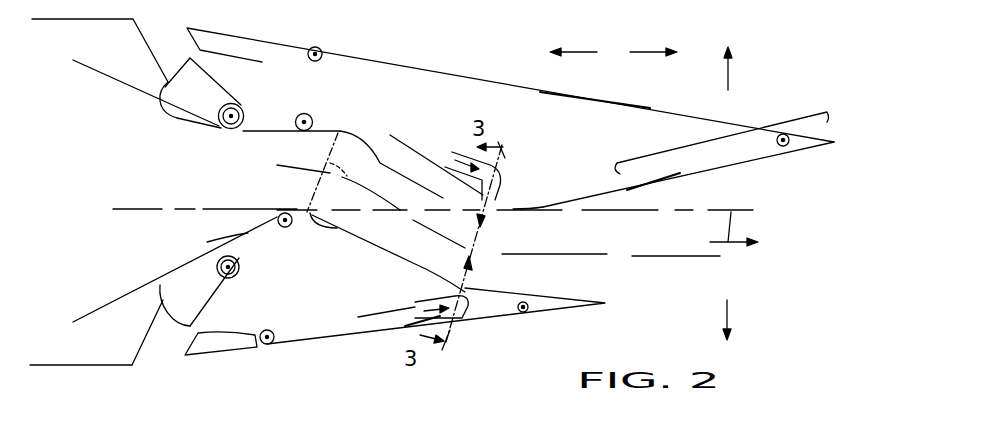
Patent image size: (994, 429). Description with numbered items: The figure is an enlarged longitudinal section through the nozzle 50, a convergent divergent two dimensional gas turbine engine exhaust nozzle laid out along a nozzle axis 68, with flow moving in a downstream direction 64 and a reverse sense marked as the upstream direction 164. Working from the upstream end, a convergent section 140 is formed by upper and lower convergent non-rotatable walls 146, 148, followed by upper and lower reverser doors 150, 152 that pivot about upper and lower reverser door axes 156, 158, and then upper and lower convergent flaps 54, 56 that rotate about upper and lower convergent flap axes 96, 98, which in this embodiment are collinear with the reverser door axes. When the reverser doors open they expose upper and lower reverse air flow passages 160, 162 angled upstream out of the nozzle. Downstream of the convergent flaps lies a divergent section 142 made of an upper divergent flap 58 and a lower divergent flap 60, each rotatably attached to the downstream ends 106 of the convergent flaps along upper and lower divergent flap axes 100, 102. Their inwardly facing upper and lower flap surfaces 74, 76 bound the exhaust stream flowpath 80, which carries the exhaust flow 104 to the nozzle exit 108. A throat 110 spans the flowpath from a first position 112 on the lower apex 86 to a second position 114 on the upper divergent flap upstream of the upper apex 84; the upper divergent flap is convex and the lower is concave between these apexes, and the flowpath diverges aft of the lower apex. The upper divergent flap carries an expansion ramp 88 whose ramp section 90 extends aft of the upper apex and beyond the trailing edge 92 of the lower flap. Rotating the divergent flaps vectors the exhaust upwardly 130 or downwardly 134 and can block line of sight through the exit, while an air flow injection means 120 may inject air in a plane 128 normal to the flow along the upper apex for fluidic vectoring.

The nozzle 50 is at (148, 368).
The upper convergent flap 54 is at (247, 133).
The lower convergent flap 56 is at (263, 225).
The upper divergent flap 58 is at (438, 193).
The lower divergent flap 60 is at (363, 250).
The downstream direction 64 is at (648, 50).
The nozzle axis 68 is at (143, 208).
The upper flap surface 74 is at (747, 163).
The lower flap surface 76 is at (507, 290).
The exhaust stream flowpath 80 is at (644, 258).
The upper apex 84 is at (513, 207).
The lower apex 86 is at (293, 212).
The expansion ramp 88 is at (720, 167).
The ramp section 90 is at (720, 120).
The trailing edge 92 is at (607, 305).
The upper convergent flap axis 96 is at (233, 110).
The lower convergent flap axis 98 is at (233, 267).
The upper divergent flap axis 100 is at (306, 122).
The lower divergent flap axis 102 is at (285, 228).
The exhaust flow 104 is at (731, 212).
The downstream ends 106 is at (285, 130).
The nozzle exit 108 is at (814, 243).
The throat 110 is at (343, 177).
The first position 112 is at (332, 227).
The second position 114 is at (330, 143).
The air flow injection means 120 is at (462, 136).
The plane 128 is at (407, 270).
The upwardly 130 is at (728, 80).
The downwardly 134 is at (727, 302).
The convergent section 140 is at (259, 58).
The divergent section 142 is at (420, 123).
The upper convergent non-rotatable wall 146 is at (110, 76).
The lower convergent non-rotatable wall 148 is at (103, 307).
The upper reverser door 150 is at (163, 113).
The lower reverser door 152 is at (173, 272).
The upper reverser door axis 156 is at (227, 113).
The lower reverser door axis 158 is at (233, 272).
The upper reverse air flow passage 160 is at (170, 42).
The lower reverse air flow passage 162 is at (163, 347).
The upstream direction 164 is at (583, 50).